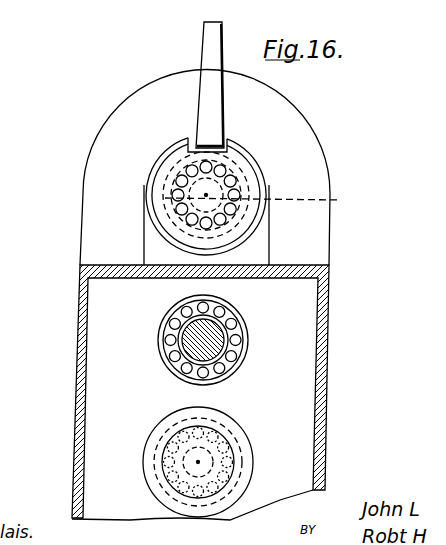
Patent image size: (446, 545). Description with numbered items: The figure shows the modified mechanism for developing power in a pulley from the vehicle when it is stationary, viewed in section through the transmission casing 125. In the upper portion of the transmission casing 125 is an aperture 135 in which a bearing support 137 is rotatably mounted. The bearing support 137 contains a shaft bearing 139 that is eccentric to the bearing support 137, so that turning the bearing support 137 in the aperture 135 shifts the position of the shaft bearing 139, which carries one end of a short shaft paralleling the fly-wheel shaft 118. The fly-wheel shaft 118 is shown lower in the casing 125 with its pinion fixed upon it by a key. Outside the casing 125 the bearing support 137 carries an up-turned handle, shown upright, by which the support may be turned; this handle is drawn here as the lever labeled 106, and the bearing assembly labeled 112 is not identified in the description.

The lever 106 is at (174, 50).
The ball bearing 112 is at (134, 202).
The fly-wheel shaft 118 is at (300, 339).
The transmission casing 125 is at (385, 249).
The aperture 135 is at (395, 168).
The bearing support 137 is at (380, 131).
The shaft bearing 139 is at (385, 210).